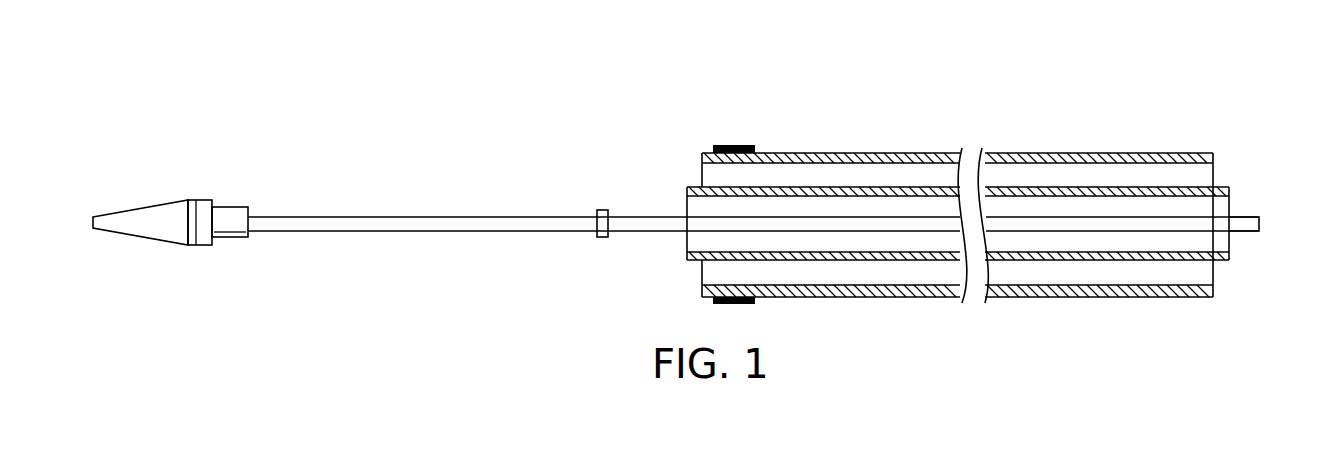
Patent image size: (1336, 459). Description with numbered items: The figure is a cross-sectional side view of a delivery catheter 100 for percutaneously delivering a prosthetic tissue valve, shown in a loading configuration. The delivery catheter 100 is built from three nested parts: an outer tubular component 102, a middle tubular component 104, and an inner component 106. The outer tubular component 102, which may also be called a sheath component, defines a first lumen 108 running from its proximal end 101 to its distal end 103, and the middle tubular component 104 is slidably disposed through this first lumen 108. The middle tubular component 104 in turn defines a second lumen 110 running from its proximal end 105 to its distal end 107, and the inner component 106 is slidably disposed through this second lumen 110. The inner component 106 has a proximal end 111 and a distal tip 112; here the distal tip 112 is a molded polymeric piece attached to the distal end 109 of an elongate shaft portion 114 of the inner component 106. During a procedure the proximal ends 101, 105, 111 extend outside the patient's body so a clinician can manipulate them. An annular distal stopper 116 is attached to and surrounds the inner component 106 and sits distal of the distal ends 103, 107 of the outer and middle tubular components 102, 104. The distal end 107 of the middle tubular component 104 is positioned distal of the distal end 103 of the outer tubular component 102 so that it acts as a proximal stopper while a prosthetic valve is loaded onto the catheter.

The delivery catheter 100 is at (607, 58).
The proximal end of outer tubular component 101 is at (1192, 153).
The outer tubular component 102 is at (1145, 153).
The distal end of outer tubular component 103 is at (708, 147).
The middle tubular component 104 is at (1067, 190).
The proximal end of middle tubular component 105 is at (1218, 188).
The inner component 106 is at (996, 222).
The distal end of middle tubular component 107 is at (688, 187).
The first lumen 108 is at (814, 175).
The distal end of elongate shaft portion 109 is at (253, 212).
The second lumen 110 is at (880, 197).
The proximal end of inner component 111 is at (1248, 217).
The distal tip 112 is at (137, 205).
The elongate shaft portion 114 is at (437, 215).
The annular distal stopper 116 is at (602, 210).